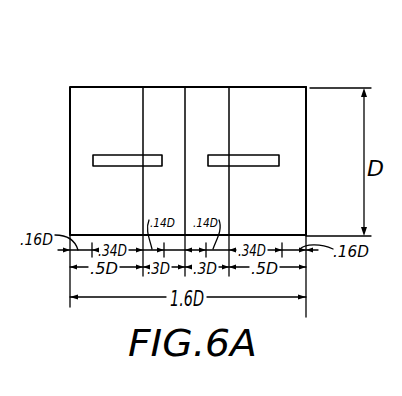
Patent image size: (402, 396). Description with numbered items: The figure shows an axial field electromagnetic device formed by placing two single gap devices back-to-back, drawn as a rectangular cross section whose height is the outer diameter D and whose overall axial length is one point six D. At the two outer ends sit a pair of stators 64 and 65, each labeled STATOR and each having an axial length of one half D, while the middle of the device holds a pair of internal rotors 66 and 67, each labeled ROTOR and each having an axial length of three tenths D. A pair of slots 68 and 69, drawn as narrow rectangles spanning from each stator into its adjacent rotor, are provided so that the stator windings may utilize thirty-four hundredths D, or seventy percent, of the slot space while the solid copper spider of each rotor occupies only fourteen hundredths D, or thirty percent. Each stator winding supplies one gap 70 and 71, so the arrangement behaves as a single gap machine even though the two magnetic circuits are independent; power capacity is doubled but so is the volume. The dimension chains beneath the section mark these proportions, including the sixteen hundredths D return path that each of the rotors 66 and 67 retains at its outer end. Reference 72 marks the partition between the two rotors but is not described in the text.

The stator 64 is at (69, 183).
The stator 65 is at (305, 216).
The internal rotor 66 is at (165, 87).
The internal rotor 67 is at (215, 87).
The slot 68 is at (94, 155).
The slot 69 is at (277, 155).
The gap 70 is at (133, 97).
The gap 71 is at (230, 89).
The partition between rotors 72 is at (185, 87).